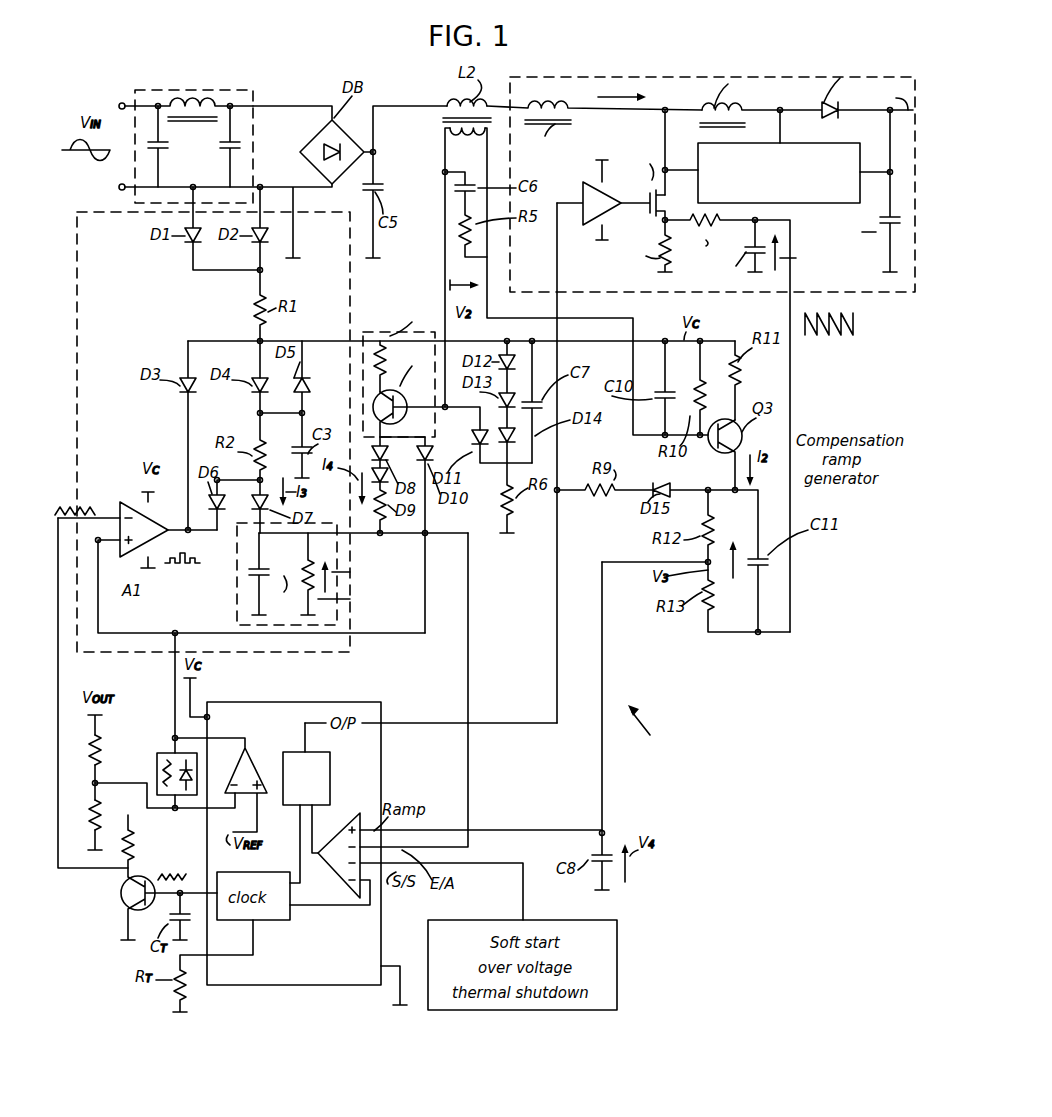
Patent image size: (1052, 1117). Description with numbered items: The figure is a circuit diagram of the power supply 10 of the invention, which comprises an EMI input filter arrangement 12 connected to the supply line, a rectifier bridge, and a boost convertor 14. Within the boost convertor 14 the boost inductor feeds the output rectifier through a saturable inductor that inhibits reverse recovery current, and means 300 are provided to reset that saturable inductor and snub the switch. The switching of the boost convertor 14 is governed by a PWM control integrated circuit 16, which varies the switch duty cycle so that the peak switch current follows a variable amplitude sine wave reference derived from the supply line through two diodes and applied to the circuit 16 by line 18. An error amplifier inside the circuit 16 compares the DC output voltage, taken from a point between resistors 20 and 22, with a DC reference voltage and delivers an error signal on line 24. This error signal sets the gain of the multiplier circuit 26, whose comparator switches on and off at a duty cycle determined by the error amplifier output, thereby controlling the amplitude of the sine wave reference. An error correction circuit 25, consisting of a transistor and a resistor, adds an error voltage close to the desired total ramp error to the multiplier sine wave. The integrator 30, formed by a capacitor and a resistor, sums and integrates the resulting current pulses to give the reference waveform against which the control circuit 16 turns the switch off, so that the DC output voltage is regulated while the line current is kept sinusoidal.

The power supply 10 is at (649, 727).
The EMI input filter arrangement 12 is at (195, 92).
The boost convertor 14 is at (540, 76).
The PWM control integrated circuit 16 is at (314, 986).
The line 18 is at (468, 617).
The resistor 20 is at (100, 758).
The resistor 22 is at (98, 792).
The line 24 is at (175, 692).
The error correction circuit 25 is at (383, 333).
The multiplier circuit 26 is at (77, 291).
The integrator 30 is at (237, 592).
The means for resetting saturable inductor and snubbing switch 300 is at (833, 144).